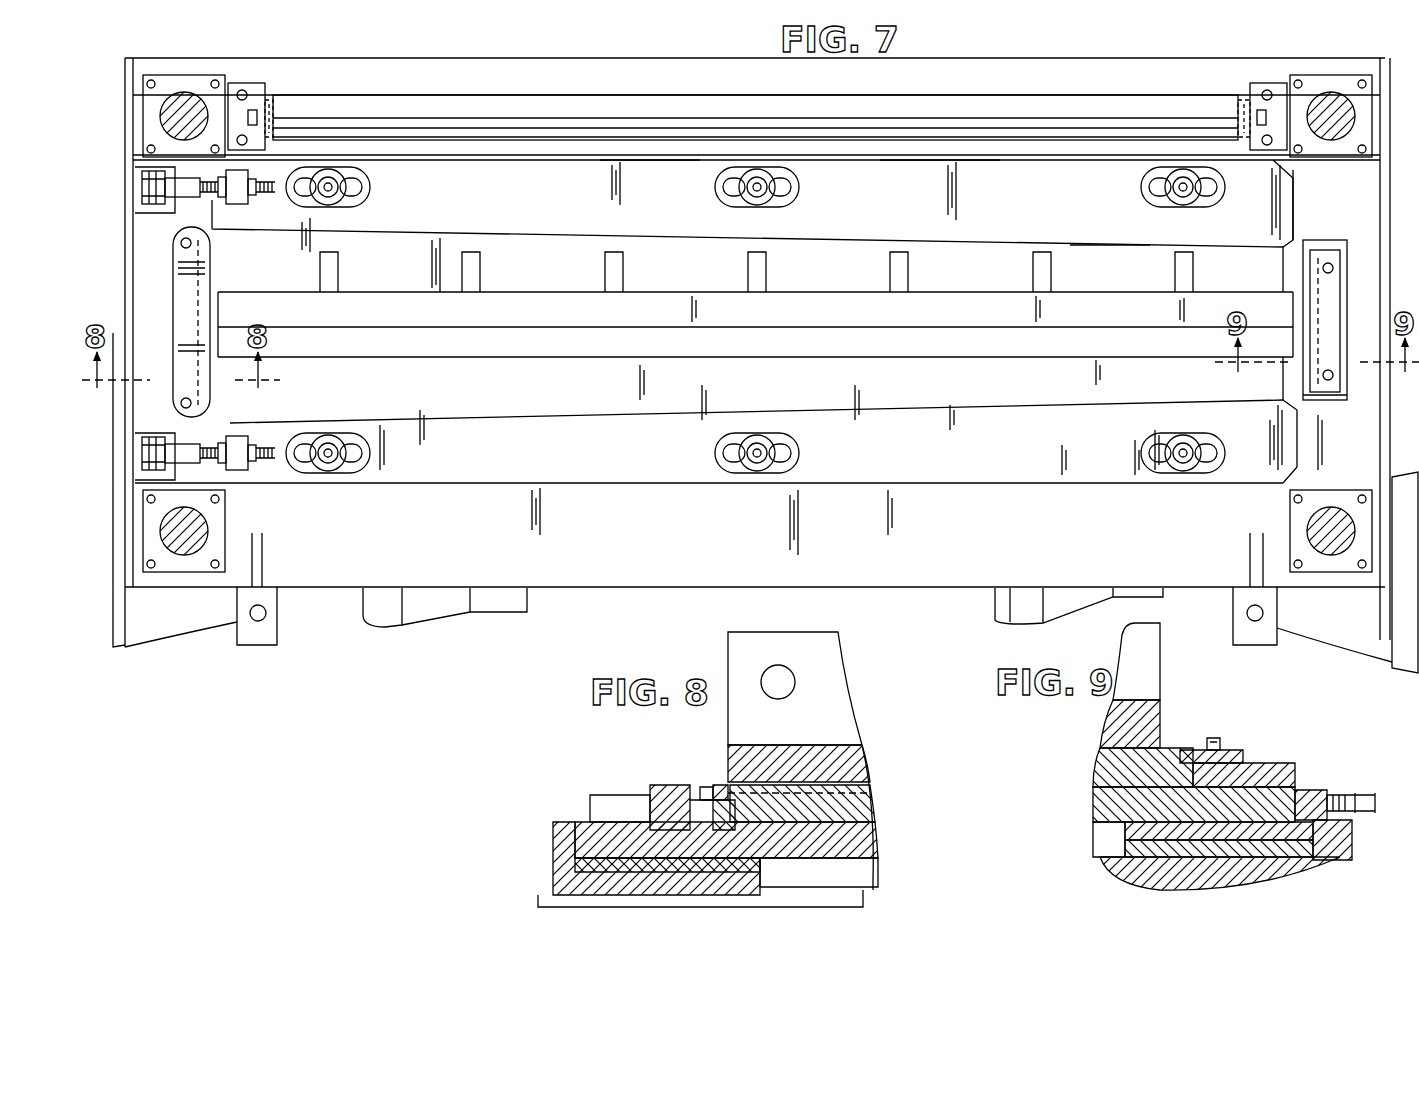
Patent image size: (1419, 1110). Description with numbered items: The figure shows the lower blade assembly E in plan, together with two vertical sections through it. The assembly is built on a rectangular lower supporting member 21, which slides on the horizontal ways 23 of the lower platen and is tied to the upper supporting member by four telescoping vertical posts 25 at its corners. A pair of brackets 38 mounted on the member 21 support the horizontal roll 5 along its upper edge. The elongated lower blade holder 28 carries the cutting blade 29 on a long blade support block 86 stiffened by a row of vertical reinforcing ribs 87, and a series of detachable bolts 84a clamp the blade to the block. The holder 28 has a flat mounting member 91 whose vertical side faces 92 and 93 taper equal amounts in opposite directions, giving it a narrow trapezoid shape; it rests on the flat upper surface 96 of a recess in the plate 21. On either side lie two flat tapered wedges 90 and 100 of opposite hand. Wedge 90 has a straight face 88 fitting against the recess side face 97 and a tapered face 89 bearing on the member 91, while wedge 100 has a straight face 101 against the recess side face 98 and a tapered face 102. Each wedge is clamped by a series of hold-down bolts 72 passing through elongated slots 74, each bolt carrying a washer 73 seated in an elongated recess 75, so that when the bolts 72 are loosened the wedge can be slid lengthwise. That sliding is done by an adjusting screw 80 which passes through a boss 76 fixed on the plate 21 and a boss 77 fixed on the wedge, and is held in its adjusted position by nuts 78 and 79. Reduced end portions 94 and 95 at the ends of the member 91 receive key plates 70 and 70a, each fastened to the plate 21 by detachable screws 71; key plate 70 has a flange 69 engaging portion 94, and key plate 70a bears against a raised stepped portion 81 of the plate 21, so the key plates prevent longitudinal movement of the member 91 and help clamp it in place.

In FIG. 7, the horizontal roll 5 is at (625, 95).
In FIG. 7, the lower supporting member 21 is at (465, 60).
In FIG. 8, the lower supporting member 21 is at (865, 846).
In FIG. 9, the lower supporting member 21 is at (1234, 826).
In FIG. 8, the horizontal ways 23 is at (560, 848).
In FIG. 7, the telescoping vertical posts 25 is at (185, 105).
In FIG. 8, the lower blade holder 28 is at (857, 772).
In FIG. 9, the lower blade holder 28 is at (1150, 732).
In FIG. 7, the cutting blade 29 is at (1143, 343).
In FIG. 8, the cutting blade 29 is at (825, 645).
In FIG. 7, the brackets 38 is at (255, 95).
In FIG. 8, the flange 69 is at (703, 788).
In FIG. 7, the key plate 70 is at (185, 292).
In FIG. 8, the key plate 70 is at (660, 788).
In FIG. 7, the key plate 70a is at (1325, 293).
In FIG. 9, the key plate 70a is at (1243, 758).
In FIG. 7, the detachable screws 71 is at (181, 244).
In FIG. 9, the detachable screws 71 is at (1216, 740).
In FIG. 7, the hold-down bolts 72 is at (330, 195).
In FIG. 7, the washer 73 is at (757, 197).
In FIG. 7, the elongated slot 74 is at (346, 187).
In FIG. 7, the elongated recess 75 is at (360, 200).
In FIG. 7, the boss 76 is at (150, 208).
In FIG. 7, the boss 77 is at (240, 172).
In FIG. 7, the nut 78 is at (238, 440).
In FIG. 7, the nut 79 is at (250, 205).
In FIG. 7, the adjusting screw 80 is at (205, 198).
In FIG. 7, the raised stepped portion 81 is at (1372, 400).
In FIG. 9, the raised stepped portion 81 is at (1342, 845).
In FIG. 8, the detachable bolts 84a is at (795, 682).
In FIG. 7, the blade support block 86 is at (445, 305).
In FIG. 8, the blade support block 86 is at (735, 652).
In FIG. 9, the blade support block 86 is at (1145, 688).
In FIG. 7, the vertical reinforcing ribs 87 is at (338, 272).
In FIG. 7, the side face 88 is at (598, 155).
In FIG. 7, the side face 89 is at (1105, 245).
In FIG. 7, the wedge 90 is at (935, 222).
In FIG. 7, the mounting member 91 is at (582, 288).
In FIG. 8, the mounting member 91 is at (857, 812).
In FIG. 9, the mounting member 91 is at (1100, 770).
In FIG. 7, the side face 92 is at (540, 228).
In FIG. 7, the side face 93 is at (931, 384).
In FIG. 7, the reduced end portion 94 is at (210, 428).
In FIG. 8, the reduced end portion 94 is at (700, 833).
In FIG. 7, the reduced end portion 95 is at (1305, 398).
In FIG. 7, the upper surface 96 is at (1308, 225).
In FIG. 7, the side face of recess 97 is at (916, 162).
In FIG. 7, the side face of recess 98 is at (585, 480).
In FIG. 7, the wedge 100 is at (950, 470).
In FIG. 7, the side face 101 is at (545, 488).
In FIG. 7, the side face 102 is at (935, 405).
In FIG. 7, the lower blade assembly E is at (1060, 58).
In FIG. 8, the lower blade assembly E is at (865, 724).